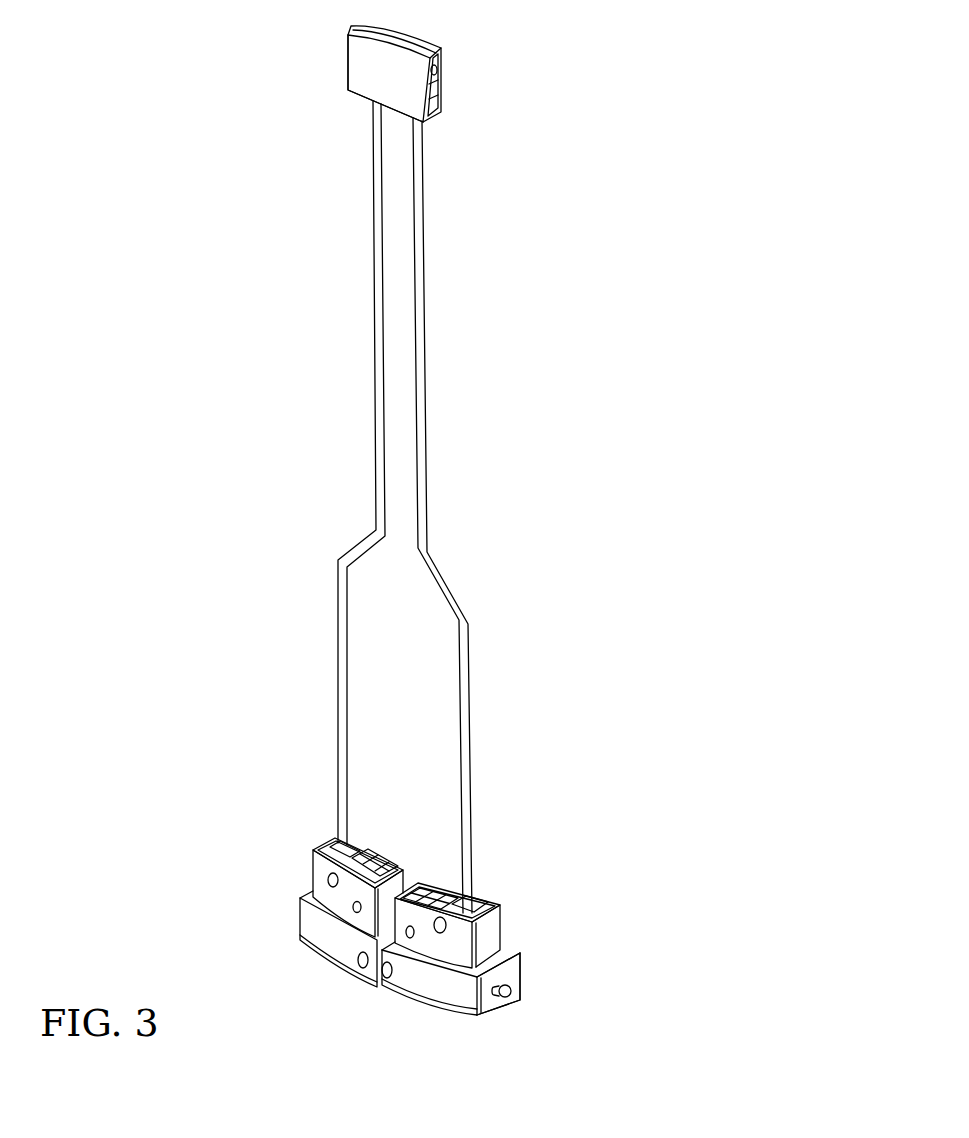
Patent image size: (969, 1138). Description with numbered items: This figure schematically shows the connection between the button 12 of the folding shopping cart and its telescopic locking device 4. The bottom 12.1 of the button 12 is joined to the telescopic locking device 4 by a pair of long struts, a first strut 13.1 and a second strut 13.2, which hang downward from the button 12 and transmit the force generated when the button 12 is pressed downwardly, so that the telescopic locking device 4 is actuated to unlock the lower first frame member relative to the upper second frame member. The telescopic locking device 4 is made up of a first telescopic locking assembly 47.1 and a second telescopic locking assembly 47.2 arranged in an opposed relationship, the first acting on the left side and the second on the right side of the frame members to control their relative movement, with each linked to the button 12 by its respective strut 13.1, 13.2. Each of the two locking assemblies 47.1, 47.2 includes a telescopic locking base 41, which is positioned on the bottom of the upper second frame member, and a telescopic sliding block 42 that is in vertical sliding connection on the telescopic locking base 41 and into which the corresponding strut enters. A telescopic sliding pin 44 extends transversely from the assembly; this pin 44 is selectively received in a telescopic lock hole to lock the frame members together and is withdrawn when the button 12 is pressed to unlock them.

The button 12 is at (407, 85).
The bottom of the button 12.1 is at (352, 92).
The first strut 13.1 is at (379, 427).
The second strut 13.2 is at (540, 390).
The telescopic locking device 4 is at (428, 901).
The telescopic sliding block 42 is at (475, 900).
The telescopic locking base 41 is at (541, 980).
The telescopic sliding pin 44 is at (511, 991).
The first telescopic locking assembly 47.1 is at (532, 1014).
The second telescopic locking assembly 47.2 is at (269, 882).